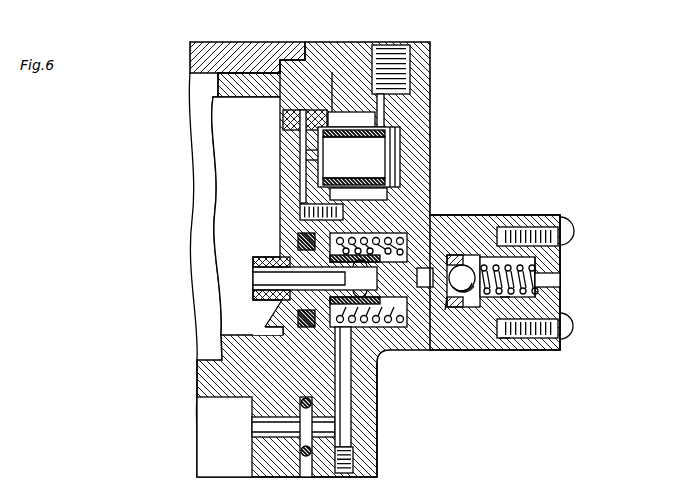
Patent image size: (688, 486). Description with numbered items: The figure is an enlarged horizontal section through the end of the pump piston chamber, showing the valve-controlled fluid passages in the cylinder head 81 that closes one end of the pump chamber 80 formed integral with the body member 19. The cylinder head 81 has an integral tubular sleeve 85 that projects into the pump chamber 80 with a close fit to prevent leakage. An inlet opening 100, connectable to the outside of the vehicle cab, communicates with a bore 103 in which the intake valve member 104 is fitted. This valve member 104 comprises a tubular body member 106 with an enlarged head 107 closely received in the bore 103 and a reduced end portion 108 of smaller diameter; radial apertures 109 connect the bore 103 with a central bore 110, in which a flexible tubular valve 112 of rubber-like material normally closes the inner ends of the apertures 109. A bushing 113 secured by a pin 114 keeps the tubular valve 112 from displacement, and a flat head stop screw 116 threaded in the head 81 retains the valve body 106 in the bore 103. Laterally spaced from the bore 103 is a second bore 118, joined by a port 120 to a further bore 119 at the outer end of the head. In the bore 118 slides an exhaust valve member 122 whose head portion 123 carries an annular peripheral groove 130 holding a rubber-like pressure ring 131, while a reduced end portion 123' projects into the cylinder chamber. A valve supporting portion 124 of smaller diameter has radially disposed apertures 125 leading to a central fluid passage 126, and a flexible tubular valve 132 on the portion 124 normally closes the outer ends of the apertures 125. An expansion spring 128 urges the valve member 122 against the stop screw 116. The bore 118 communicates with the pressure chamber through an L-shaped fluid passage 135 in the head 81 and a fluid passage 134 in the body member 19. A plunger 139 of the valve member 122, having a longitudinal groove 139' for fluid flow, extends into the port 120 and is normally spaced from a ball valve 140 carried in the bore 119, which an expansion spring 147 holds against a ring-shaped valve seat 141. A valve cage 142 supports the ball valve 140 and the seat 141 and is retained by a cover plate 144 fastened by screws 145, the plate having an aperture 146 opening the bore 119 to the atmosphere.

The body member 19 is at (219, 43).
The inlet opening 100 is at (400, 49).
The tubular sleeve 85 is at (220, 86).
The pump chamber 80 is at (256, 238).
The cylinder head 81 is at (378, 398).
The enlarged head 107 is at (312, 110).
The reduced end portion 108 is at (331, 83).
The radial apertures 109 is at (352, 112).
The central bore 110 is at (300, 128).
The tubular body member 106 is at (403, 125).
The bore 103 is at (403, 181).
The intake valve member 104 is at (382, 159).
The tubular valve 112 is at (402, 144).
The bushing 113 is at (318, 150).
The pin 114 is at (318, 160).
The flat head stop screw 116 is at (300, 209).
The second bore 118 is at (290, 331).
The second bore 119 is at (505, 300).
The port 120 is at (445, 310).
The exhaust valve member 122 is at (253, 262).
The head portion 123 is at (368, 236).
The reduced end portion 123' is at (216, 301).
The valve supporting portion 124 is at (433, 223).
The radially disposed apertures 125 is at (368, 288).
The central fluid passage 126 is at (253, 279).
The expansion spring 128 is at (387, 250).
The annular peripheral groove 130 is at (287, 329).
The pressure ring 131 is at (308, 328).
The flexible tubular valve 132 is at (329, 299).
The fluid passage 134 is at (262, 428).
The L-shaped fluid passage 135 is at (345, 420).
The plunger 139 is at (423, 332).
The groove 139' is at (452, 233).
The ball valve 140 is at (466, 272).
The valve seat 141 is at (462, 307).
The valve cage 142 is at (505, 338).
The cover plate 144 is at (556, 309).
The screws 145 is at (570, 228).
The aperture 146 is at (555, 283).
The expansion spring 147 is at (540, 272).